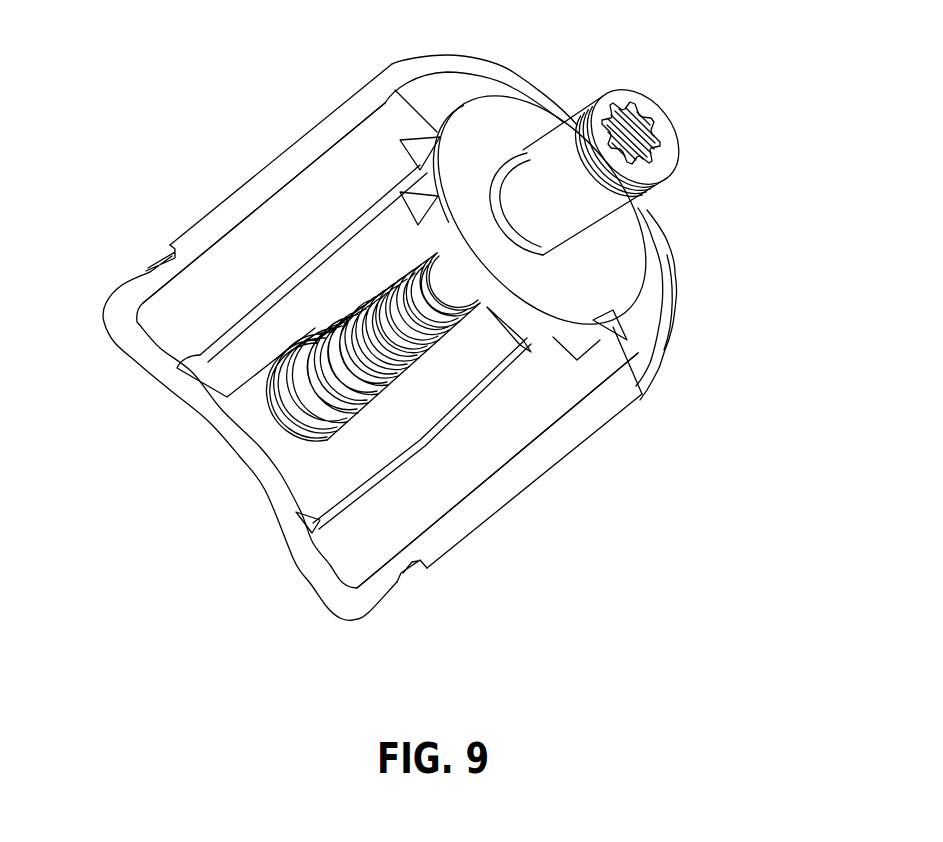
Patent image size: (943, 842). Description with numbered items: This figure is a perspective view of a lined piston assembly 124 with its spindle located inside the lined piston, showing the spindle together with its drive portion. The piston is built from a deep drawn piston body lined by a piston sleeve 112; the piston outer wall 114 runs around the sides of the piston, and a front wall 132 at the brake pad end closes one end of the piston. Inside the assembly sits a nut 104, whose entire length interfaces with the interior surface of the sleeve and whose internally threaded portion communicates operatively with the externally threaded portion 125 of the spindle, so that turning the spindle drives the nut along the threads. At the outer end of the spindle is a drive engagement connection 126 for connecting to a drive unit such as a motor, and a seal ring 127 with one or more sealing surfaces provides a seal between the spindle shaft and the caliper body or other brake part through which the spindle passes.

The lined piston assembly 124 is at (278, 128).
The nut 104 is at (318, 497).
The front wall 132 is at (172, 386).
The piston sleeve 112 is at (497, 428).
The piston outer wall 114 is at (452, 545).
The externally threaded portion 125 is at (295, 432).
The drive engagement connection 126 is at (658, 157).
The seal ring 127 is at (548, 324).